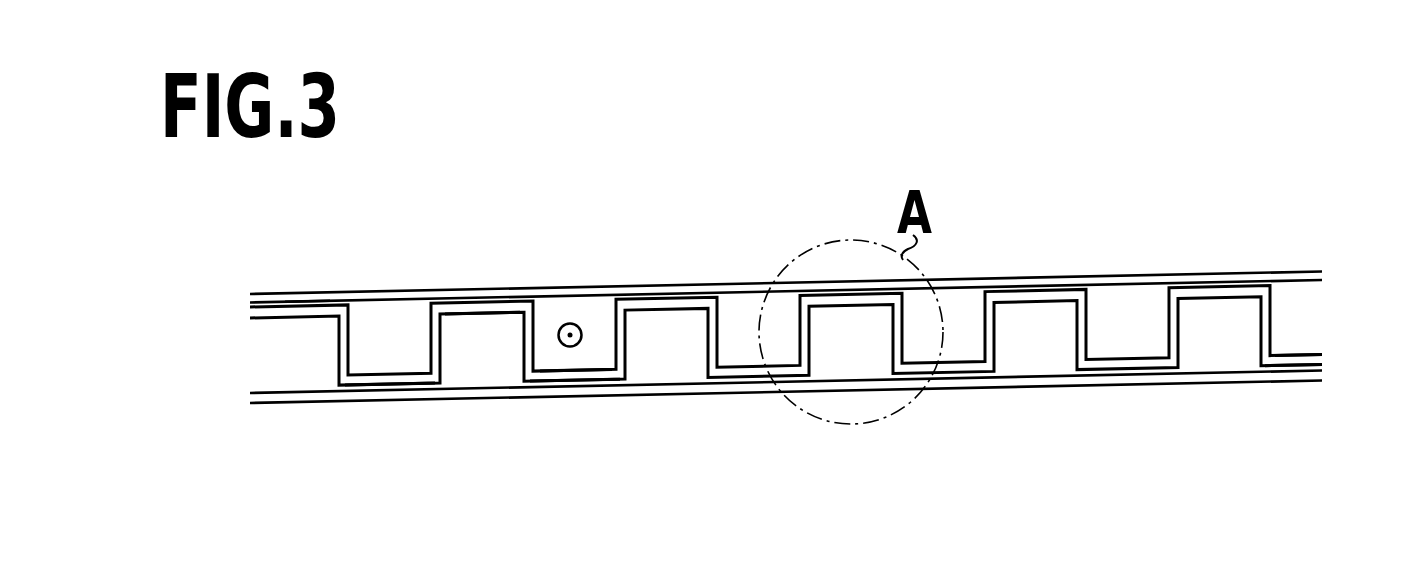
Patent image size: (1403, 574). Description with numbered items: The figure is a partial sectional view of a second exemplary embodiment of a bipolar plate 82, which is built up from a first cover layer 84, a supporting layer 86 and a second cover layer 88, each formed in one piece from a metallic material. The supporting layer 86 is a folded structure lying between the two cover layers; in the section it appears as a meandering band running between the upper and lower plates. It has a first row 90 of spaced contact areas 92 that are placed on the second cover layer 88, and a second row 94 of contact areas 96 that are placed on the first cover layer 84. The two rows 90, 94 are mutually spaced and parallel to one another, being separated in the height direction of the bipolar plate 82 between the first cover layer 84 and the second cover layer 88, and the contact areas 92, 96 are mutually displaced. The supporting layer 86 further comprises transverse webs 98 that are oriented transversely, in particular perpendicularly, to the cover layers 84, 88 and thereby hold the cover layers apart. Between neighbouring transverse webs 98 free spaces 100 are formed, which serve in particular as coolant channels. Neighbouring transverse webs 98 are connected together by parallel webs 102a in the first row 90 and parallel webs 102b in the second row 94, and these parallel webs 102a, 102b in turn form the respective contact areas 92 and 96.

The bipolar plate 82 is at (819, 307).
The first cover layer 84 is at (1123, 386).
The supporting layer 86 is at (1298, 354).
The second cover layer 88 is at (1108, 282).
The first row 90 is at (207, 315).
The contact areas 92 is at (302, 304).
The second row 94 is at (277, 375).
The contact areas 96 is at (407, 385).
The transverse webs 98 is at (433, 338).
The free spaces 100 is at (605, 336).
The parallel webs 102a is at (490, 314).
The parallel webs 102b is at (575, 378).